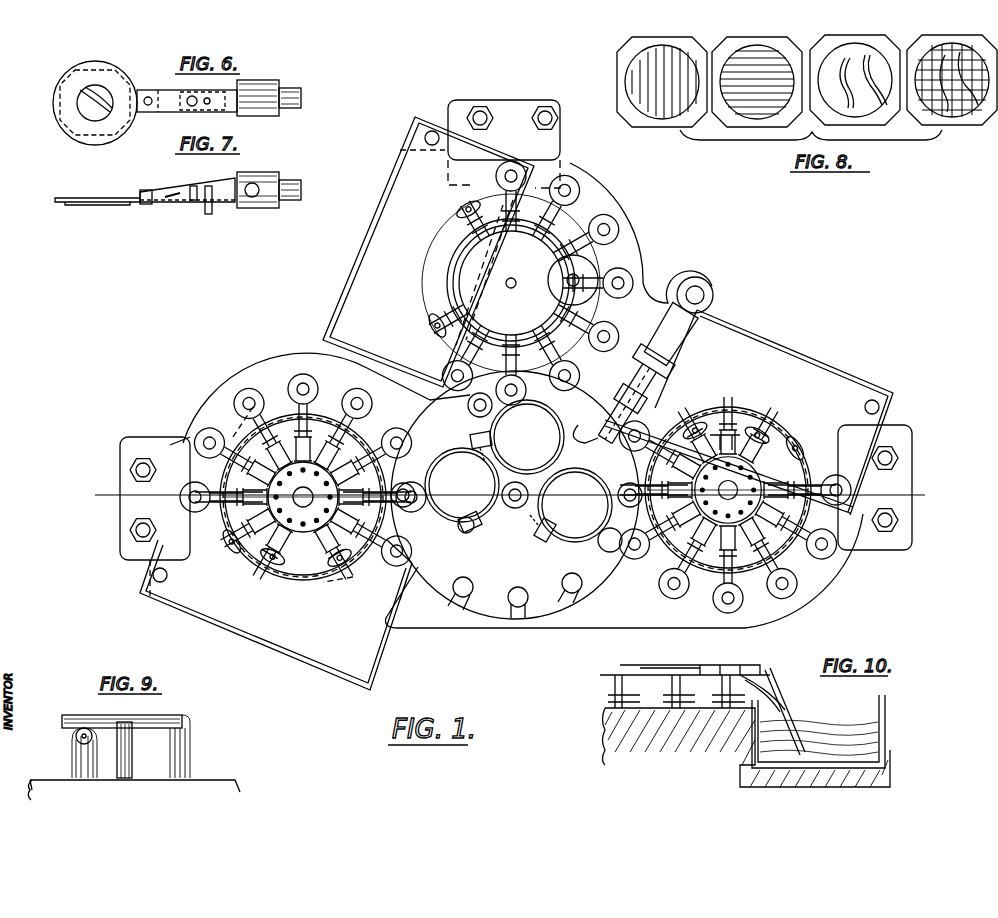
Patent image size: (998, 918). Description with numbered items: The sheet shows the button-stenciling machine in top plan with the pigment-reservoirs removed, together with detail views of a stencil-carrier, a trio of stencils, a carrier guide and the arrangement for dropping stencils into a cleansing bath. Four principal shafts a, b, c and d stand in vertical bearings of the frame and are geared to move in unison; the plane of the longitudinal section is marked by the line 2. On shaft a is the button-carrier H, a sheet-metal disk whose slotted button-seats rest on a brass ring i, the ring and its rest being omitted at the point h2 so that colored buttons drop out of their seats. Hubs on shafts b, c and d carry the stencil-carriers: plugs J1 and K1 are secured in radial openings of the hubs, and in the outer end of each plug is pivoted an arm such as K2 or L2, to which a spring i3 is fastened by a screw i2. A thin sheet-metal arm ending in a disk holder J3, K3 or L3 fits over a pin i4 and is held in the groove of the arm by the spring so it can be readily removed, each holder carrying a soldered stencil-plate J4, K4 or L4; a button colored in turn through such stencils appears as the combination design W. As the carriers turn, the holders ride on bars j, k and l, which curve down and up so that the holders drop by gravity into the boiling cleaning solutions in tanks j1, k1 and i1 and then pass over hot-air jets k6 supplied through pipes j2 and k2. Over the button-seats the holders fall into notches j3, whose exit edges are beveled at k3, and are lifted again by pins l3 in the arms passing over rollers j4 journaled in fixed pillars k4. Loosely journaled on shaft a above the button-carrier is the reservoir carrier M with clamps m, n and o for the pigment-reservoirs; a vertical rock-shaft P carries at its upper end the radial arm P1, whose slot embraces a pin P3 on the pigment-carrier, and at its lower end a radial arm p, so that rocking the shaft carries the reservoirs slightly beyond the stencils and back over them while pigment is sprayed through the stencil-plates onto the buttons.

In FIG. 1, the principal shaft c is at (540, 283).
In FIG. 1, the principal shaft b is at (303, 469).
In FIG. 1, the principal shaft d is at (733, 507).
In FIG. 1, the bar k is at (550, 283).
In FIG. 1, the arm K2 is at (527, 269).
In FIG. 6, the arm K2 is at (225, 88).
In FIG. 7, the arm K2 is at (187, 177).
In FIG. 1, the pipe k2 is at (592, 244).
In FIG. 1, the disk holder K3 is at (449, 269).
In FIG. 6, the disk holder K3 is at (62, 118).
In FIG. 7, the disk holder K3 is at (70, 198).
In FIG. 6, the plug K1 is at (283, 88).
In FIG. 7, the plug K1 is at (285, 180).
In FIG. 1, the tank k1 is at (428, 252).
In FIG. 1, the tank j1 is at (442, 615).
In FIG. 1, the tank i1 is at (749, 412).
In FIG. 10, the tank i1 is at (852, 722).
In FIG. 1, the bar j is at (303, 472).
In FIG. 9, the bar j is at (160, 720).
In FIG. 1, the plug J1 is at (303, 493).
In FIG. 1, the pipe j2 is at (287, 471).
In FIG. 1, the disk holder J3 is at (322, 370).
In FIG. 1, the screw i2 is at (732, 517).
In FIG. 7, the screw i2 is at (193, 200).
In FIG. 1, the arm L2 is at (767, 506).
In FIG. 10, the arm L2 is at (790, 712).
In FIG. 1, the disk holder L3 is at (728, 506).
In FIG. 1, the brass ring i is at (653, 568).
In FIG. 1, the button-carrier H is at (515, 498).
In FIG. 1, the drop-out point h2 is at (457, 596).
In FIG. 1, the clamp n is at (458, 500).
In FIG. 1, the clamp m is at (548, 408).
In FIG. 1, the clamp o is at (575, 505).
In FIG. 1, the pin P3 is at (585, 450).
In FIG. 1, the principal shaft a is at (515, 495).
In FIG. 1, the pigment-reservoir carrier M is at (518, 523).
In FIG. 1, the rock-shaft P is at (652, 360).
In FIG. 1, the radial arm P1 is at (690, 313).
In FIG. 1, the radial arm p is at (588, 426).
In FIG. 1, the section line 2 is at (507, 492).
In FIG. 7, the pin i4 is at (144, 204).
In FIG. 7, the spring i3 is at (172, 198).
In FIG. 7, the pin l3 is at (213, 210).
In FIG. 8, the stencil-plate J4 is at (662, 69).
In FIG. 8, the stencil-plate K4 is at (757, 69).
In FIG. 8, the stencil-plate L4 is at (855, 68).
In FIG. 8, the stenciled button W is at (952, 68).
In FIG. 9, the notch j3 is at (100, 722).
In FIG. 9, the beveled exit edge k3 is at (86, 718).
In FIG. 9, the fixed pillar k4 is at (117, 756).
In FIG. 9, the roller j4 is at (66, 738).
In FIG. 10, the hot-air jet k6 is at (628, 675).
In FIG. 10, the bar l is at (782, 703).